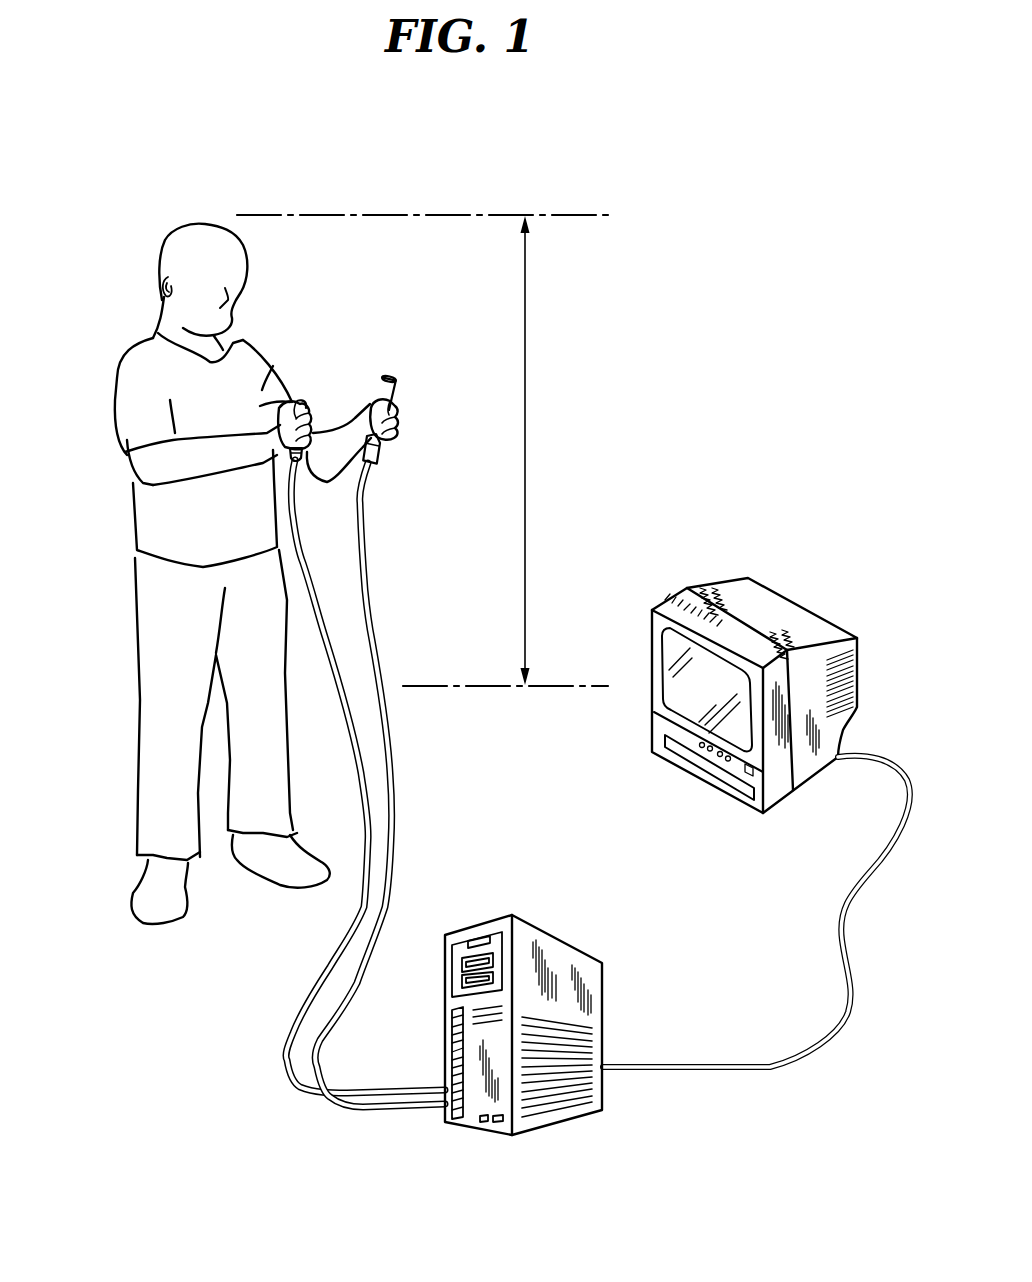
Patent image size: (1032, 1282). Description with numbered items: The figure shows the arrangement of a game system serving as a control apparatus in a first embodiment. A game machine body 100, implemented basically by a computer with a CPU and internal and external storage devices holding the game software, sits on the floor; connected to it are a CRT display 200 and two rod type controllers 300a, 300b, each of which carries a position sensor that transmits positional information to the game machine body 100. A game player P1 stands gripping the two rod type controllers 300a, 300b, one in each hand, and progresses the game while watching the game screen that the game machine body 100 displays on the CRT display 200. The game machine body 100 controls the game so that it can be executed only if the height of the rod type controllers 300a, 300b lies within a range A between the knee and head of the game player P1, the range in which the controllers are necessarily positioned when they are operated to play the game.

The game machine body 100 is at (467, 1126).
The CRT display 200 is at (723, 597).
The rod type controller 300a is at (306, 402).
The rod type controller 300b is at (394, 393).
The game player P1 is at (152, 523).
The range A is at (422, 450).